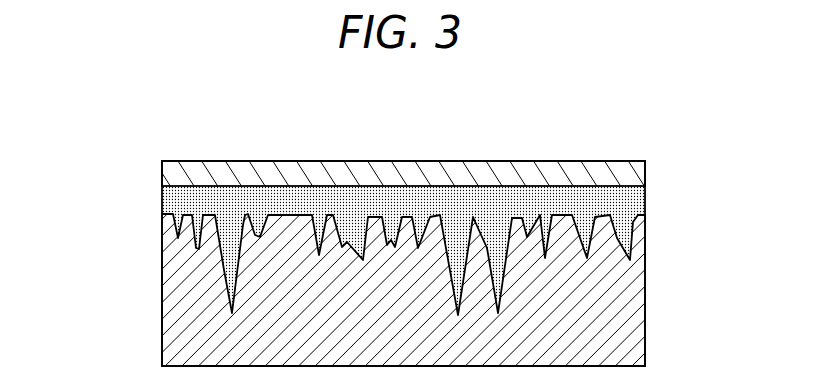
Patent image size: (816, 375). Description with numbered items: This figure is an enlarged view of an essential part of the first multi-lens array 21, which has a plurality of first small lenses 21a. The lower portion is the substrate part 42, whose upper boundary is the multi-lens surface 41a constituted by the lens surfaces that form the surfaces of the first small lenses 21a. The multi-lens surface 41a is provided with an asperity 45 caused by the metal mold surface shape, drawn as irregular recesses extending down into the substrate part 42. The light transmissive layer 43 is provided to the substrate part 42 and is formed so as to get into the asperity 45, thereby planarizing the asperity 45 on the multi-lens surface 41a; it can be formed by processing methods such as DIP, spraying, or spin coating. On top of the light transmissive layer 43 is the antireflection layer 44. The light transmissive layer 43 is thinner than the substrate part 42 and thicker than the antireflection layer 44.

The first multi-lens array 21 is at (602, 148).
The first small lens 21a is at (393, 278).
The multi-lens surface 41a is at (288, 213).
The substrate part 42 is at (408, 237).
The light transmissive layer 43 is at (633, 203).
The antireflection layer 44 is at (623, 177).
The asperity 45 is at (222, 224).